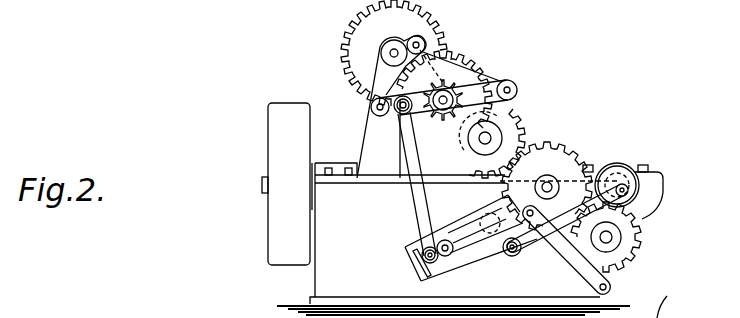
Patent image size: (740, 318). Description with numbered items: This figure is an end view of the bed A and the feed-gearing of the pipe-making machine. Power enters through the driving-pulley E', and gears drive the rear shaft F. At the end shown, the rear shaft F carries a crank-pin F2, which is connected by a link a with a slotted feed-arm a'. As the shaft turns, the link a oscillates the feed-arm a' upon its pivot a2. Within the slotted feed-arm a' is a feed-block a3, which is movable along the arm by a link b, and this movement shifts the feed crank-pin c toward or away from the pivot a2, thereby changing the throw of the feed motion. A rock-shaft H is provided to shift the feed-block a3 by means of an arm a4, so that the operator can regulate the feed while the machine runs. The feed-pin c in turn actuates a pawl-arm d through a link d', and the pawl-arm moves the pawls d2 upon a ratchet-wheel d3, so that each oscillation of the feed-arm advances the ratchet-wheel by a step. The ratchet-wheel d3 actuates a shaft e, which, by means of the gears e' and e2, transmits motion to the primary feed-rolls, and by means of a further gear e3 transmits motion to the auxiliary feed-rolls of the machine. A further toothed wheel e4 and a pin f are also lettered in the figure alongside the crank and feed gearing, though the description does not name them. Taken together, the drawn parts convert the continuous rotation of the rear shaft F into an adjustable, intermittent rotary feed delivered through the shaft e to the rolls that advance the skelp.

The driving-pulley E' is at (272, 184).
The frame A is at (472, 240).
The pawl-arm d is at (391, 107).
The link d' is at (408, 176).
The pawls d2 is at (512, 64).
The ratchet-wheel d3 is at (460, 48).
The shaft e is at (444, 97).
The gear e' is at (446, 90).
The gear e2 is at (384, 53).
The gear e3 is at (526, 133).
The gear wheels e4 is at (572, 152).
The rear shaft F is at (618, 163).
The crank-pin F2 is at (632, 193).
The crank pin f is at (612, 240).
The link a is at (515, 233).
The slotted feed-arm a' is at (406, 252).
The pivot a2 is at (490, 222).
The feed-block a3 is at (445, 240).
The arm a4 is at (578, 265).
The link b is at (481, 234).
The feed crank-pin c is at (436, 263).
The rock-shaft H is at (613, 286).